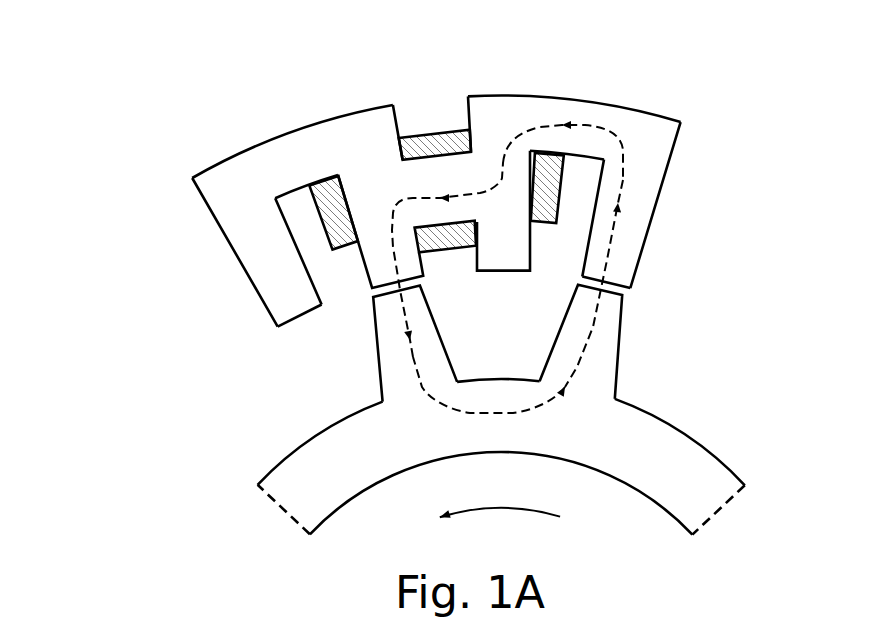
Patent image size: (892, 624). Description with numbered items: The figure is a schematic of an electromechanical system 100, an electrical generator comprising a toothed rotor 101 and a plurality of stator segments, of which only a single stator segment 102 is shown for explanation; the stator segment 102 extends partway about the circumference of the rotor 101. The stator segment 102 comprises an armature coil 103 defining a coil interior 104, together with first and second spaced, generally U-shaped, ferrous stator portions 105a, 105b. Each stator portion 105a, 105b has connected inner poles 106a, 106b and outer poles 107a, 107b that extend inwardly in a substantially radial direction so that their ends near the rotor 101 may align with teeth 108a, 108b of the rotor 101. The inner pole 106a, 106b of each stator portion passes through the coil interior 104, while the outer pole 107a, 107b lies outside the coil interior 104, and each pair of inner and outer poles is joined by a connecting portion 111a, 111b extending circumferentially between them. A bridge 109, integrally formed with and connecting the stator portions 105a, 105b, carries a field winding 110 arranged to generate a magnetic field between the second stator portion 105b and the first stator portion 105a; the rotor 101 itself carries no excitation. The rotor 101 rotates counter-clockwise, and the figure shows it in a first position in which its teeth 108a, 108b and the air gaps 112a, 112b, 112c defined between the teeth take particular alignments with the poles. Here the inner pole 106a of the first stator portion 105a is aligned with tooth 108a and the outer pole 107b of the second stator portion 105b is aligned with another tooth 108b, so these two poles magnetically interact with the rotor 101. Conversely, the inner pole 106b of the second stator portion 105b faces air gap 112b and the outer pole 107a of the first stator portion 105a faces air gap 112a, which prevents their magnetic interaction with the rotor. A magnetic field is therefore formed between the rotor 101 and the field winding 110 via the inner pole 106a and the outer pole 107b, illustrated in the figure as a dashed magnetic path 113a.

The electromechanical system 100 is at (172, 113).
The rotor 101 is at (657, 385).
The stator segment 102 is at (180, 192).
The armature coil 103 is at (327, 177).
The coil interior 104 is at (387, 192).
The first stator portion 105a is at (225, 213).
The second stator portion 105b is at (635, 177).
The inner pole of first stator portion 106a is at (380, 263).
The inner pole of second stator portion 106b is at (512, 233).
The outer pole of first stator portion 107a is at (252, 253).
The outer pole of second stator portion 107b is at (632, 243).
The tooth of rotor 108a is at (393, 358).
The tooth of rotor 108b is at (602, 342).
The bridge 109 is at (418, 187).
The field winding 110 is at (443, 130).
The connecting portion 111a is at (273, 173).
The connecting portion 111b is at (568, 108).
The air gap 112a is at (335, 408).
The air gap 112b is at (535, 353).
The air gap 112c is at (642, 323).
The magnetic path 113a is at (630, 140).